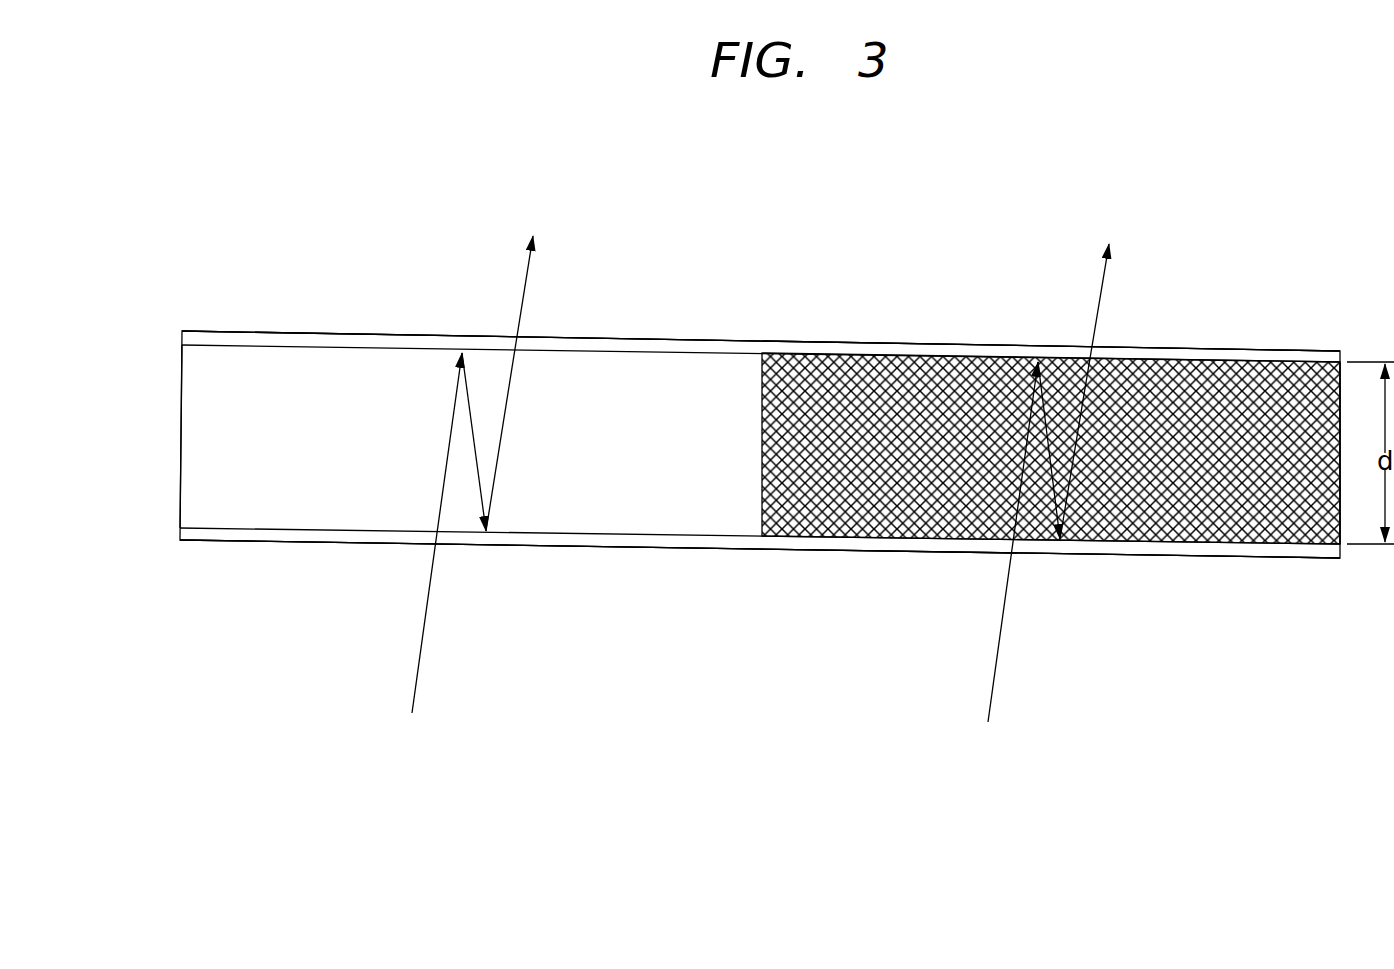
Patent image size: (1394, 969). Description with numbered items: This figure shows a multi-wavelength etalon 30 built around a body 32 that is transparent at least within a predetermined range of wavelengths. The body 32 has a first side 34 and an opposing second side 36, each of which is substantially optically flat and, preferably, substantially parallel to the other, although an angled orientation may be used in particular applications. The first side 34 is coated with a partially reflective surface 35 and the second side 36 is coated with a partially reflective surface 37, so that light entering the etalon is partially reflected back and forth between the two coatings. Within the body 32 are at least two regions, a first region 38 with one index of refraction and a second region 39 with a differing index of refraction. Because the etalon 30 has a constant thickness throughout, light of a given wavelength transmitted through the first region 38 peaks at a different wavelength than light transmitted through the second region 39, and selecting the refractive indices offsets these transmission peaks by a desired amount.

The multi-wavelength etalon 30 is at (152, 240).
The body 32 is at (212, 440).
The first side 34 is at (208, 333).
The partially reflective surface 35 is at (243, 339).
The second side 36 is at (208, 533).
The partially reflective surface 37 is at (243, 546).
The first region 38 is at (650, 400).
The second region 39 is at (860, 397).